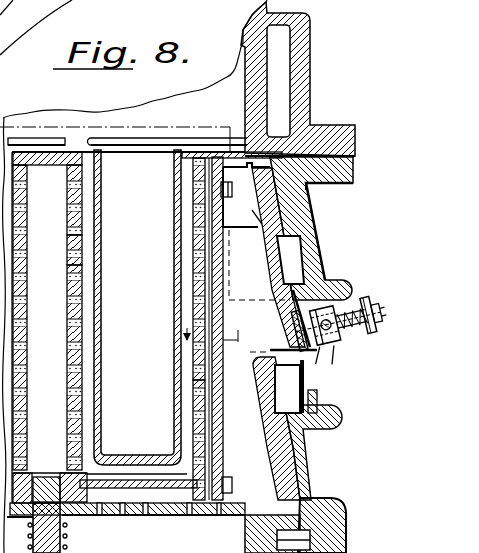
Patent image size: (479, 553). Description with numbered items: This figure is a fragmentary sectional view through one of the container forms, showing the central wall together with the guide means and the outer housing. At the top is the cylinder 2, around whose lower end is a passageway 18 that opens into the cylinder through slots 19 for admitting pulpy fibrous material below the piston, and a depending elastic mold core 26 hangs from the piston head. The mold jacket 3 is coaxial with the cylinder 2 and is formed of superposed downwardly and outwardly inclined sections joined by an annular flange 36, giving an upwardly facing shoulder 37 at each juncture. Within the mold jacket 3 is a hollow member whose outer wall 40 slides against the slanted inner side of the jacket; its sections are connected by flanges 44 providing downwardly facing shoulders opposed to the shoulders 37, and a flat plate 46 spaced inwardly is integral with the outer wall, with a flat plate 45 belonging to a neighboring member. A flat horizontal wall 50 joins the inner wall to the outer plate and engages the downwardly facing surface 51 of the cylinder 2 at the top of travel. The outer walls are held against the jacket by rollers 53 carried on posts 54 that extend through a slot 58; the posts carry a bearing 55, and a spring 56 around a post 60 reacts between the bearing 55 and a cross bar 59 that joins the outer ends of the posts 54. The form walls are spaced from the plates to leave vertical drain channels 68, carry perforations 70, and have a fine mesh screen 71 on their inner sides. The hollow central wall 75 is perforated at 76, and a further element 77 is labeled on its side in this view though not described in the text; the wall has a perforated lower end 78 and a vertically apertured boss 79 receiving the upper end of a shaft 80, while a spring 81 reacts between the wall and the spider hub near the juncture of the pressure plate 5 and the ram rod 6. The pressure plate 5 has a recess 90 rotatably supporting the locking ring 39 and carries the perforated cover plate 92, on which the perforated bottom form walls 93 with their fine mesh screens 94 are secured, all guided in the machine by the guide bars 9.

The cylinder 2 is at (253, 32).
The mold jacket 3 is at (313, 213).
The pressure plate 5 is at (153, 526).
The ram rod 6 is at (349, 322).
The guide bars 9 is at (214, 341).
The passageway 18 is at (280, 65).
The slots 19 is at (247, 137).
The elastic mold core 26 is at (150, 160).
The annular flange 36 is at (302, 290).
The upwardly facing shoulder 37 is at (300, 263).
The locking ring 39 is at (250, 525).
The outer wall 40 is at (282, 454).
The flanges 44 is at (246, 197).
The flat plate 45 is at (260, 249).
The flat plate 46 is at (222, 460).
The flat horizontal wall 50 is at (247, 163).
The downwardly facing surface 51 is at (313, 188).
The rollers 53 is at (342, 348).
The posts 54 is at (375, 336).
The bearing 55 is at (334, 362).
The spring 56 is at (334, 311).
The slot 58 is at (312, 390).
The cross bar 59 is at (395, 341).
The post 60 is at (354, 294).
The vertical drain channels 68 is at (192, 373).
The perforations 70 is at (193, 392).
The fine mesh screen 71 is at (193, 305).
The hollow central wall 75 is at (80, 228).
The perforations 76 is at (67, 265).
The ring 77 is at (67, 282).
The perforated lower end 78 is at (33, 480).
The vertically apertured boss 79 is at (50, 474).
The shaft 80 is at (72, 538).
The spring 81 is at (71, 538).
The recess 90 is at (290, 527).
The perforated cover plate 92 is at (160, 517).
The perforated bottom form walls 93 is at (103, 483).
The fine mesh screen 94 is at (138, 483).